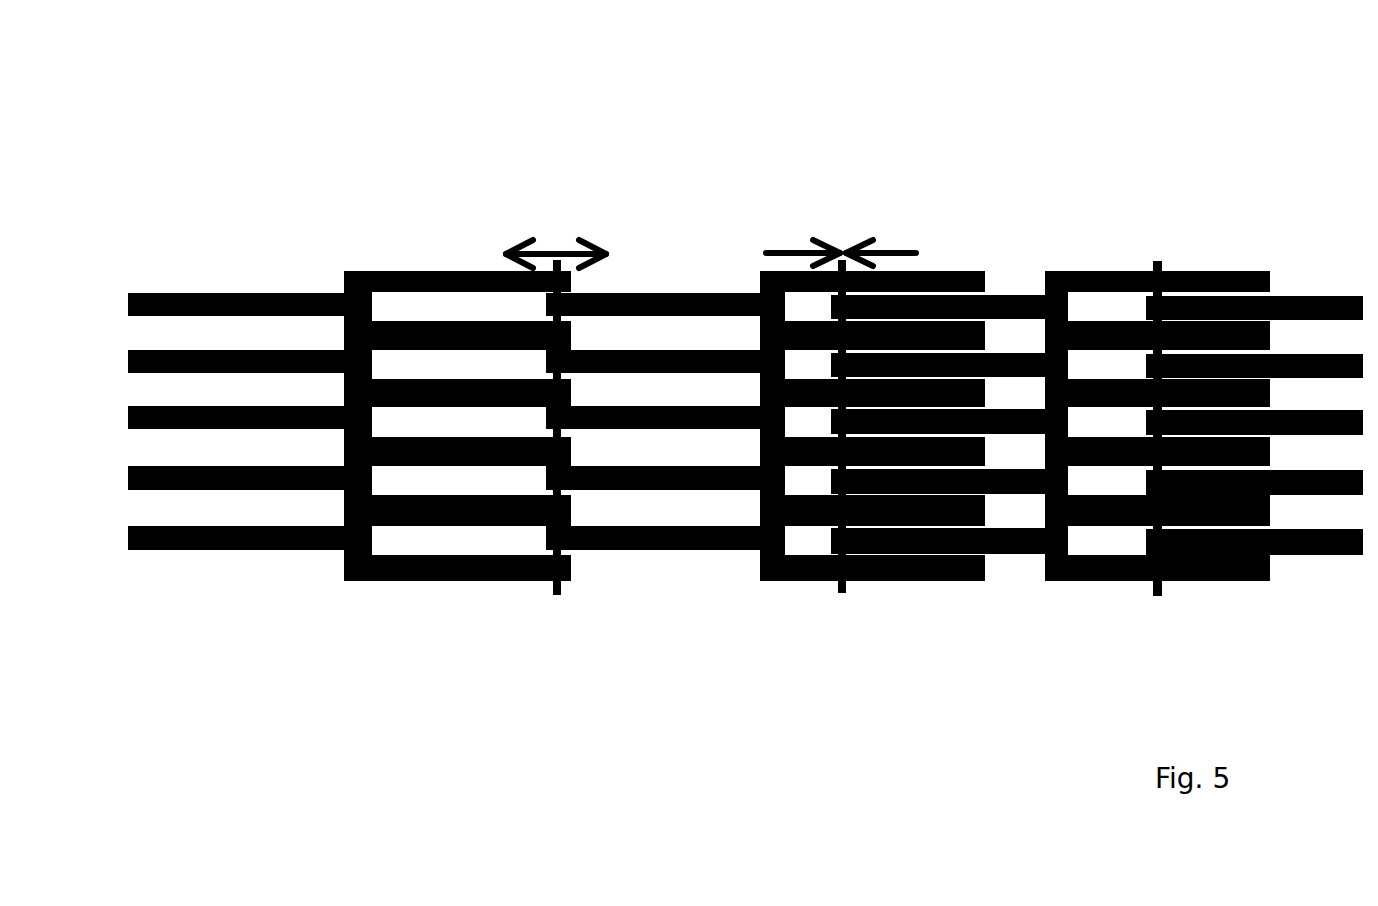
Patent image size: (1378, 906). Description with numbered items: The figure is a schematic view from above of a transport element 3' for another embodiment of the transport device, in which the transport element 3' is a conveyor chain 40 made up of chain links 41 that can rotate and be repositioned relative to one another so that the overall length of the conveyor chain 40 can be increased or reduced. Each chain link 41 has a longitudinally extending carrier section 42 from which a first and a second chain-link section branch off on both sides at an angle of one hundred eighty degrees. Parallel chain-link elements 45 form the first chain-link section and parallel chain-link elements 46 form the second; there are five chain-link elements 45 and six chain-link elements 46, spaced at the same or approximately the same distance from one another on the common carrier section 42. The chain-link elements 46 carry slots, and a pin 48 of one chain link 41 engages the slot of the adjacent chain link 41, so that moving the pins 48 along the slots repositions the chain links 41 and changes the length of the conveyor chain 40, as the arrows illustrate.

The transport element 3' is at (269, 81).
The conveyor chain 40 is at (387, 135).
The chain link 41 is at (315, 607).
The carrier section 42 is at (347, 263).
The chain-link element 45 is at (205, 285).
The chain-link element 46 is at (442, 263).
The pin 48 is at (547, 587).